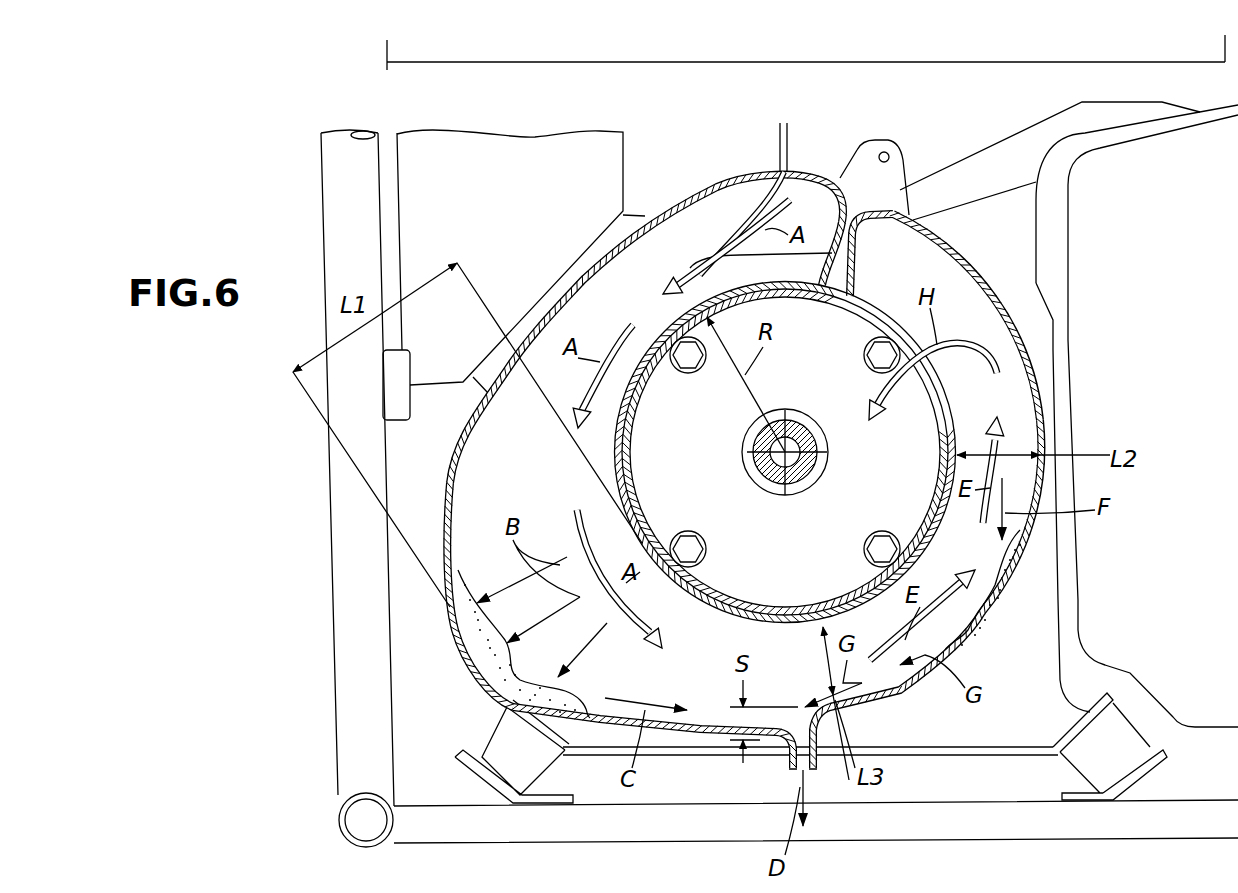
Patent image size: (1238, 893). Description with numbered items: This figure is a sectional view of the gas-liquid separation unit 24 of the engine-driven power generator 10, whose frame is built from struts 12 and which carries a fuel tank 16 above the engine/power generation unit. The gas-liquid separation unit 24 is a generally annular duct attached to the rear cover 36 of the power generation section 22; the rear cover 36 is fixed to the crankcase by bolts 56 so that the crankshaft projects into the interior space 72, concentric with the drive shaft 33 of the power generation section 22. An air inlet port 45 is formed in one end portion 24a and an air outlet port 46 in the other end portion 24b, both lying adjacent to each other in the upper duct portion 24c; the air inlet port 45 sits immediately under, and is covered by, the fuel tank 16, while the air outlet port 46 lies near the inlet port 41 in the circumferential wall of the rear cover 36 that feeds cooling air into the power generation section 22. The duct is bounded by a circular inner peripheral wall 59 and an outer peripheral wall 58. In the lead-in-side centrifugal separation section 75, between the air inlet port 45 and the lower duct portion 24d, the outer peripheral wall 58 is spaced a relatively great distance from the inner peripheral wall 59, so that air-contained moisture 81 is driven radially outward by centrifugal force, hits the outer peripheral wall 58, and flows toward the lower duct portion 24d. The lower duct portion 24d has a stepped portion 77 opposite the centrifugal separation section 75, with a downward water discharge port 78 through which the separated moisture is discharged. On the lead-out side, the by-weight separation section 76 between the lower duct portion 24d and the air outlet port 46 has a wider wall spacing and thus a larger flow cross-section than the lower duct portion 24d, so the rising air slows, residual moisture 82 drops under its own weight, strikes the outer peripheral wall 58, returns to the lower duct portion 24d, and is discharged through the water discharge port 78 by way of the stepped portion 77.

The engine-driven power generator 10 is at (277, 200).
The strut 12 is at (330, 503).
The fuel tank 16 is at (387, 45).
The power generation section 22 is at (655, 337).
The gas-liquid separation unit 24 is at (601, 268).
The one end portion 24a is at (822, 180).
The other end portion 24b is at (905, 217).
The upper duct portion 24c is at (880, 140).
The lower duct portion 24d is at (786, 737).
The drive shaft 33 is at (830, 452).
The rear cover 36 is at (640, 470).
The inlet port 41 is at (865, 310).
The air inlet port 45 is at (712, 232).
The air outlet port 46 is at (886, 310).
The bolts 56 is at (880, 550).
The outer peripheral wall 58 is at (457, 455).
The inner peripheral wall 59 is at (612, 445).
The interior space 72 is at (871, 509).
The centrifugal separation section 75 is at (440, 557).
The by-weight separation section 76 is at (1045, 432).
The stepped portion 77 is at (822, 738).
The water discharge port 78 is at (810, 773).
The air-contained moisture 81 is at (488, 678).
The residual moisture 82 is at (1010, 590).